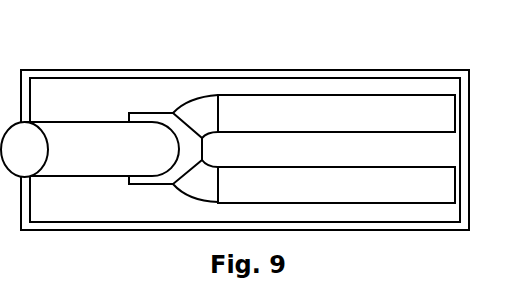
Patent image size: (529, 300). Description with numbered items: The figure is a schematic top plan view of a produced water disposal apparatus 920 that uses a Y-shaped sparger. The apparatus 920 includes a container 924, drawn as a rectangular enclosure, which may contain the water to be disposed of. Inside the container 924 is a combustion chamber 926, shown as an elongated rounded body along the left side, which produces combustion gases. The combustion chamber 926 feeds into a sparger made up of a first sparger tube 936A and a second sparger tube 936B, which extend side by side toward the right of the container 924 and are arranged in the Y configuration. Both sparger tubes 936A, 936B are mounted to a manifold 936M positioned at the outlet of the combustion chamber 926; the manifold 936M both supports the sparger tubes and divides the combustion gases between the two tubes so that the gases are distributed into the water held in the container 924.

The produced water disposal apparatus 920 is at (184, 53).
The container 924 is at (267, 71).
The combustion chamber 926 is at (90, 149).
The manifold 936M is at (183, 158).
The first sparger tube 936A is at (336, 185).
The second sparger tube 936B is at (336, 113).